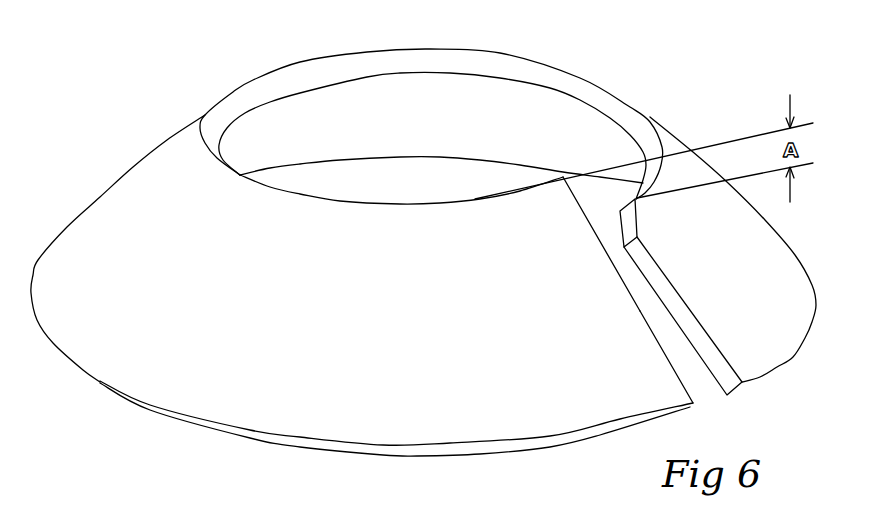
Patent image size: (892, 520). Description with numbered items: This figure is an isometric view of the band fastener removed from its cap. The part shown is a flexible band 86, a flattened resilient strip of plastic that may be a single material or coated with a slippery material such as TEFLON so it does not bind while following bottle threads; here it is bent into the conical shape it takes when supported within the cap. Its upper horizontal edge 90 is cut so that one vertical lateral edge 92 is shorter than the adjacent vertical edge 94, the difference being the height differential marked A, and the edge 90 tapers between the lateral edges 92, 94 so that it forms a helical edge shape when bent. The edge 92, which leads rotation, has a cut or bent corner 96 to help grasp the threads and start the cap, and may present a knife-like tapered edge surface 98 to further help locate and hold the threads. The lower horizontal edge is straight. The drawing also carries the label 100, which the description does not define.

The flexible band 86 is at (475, 391).
The upper horizontal edge 90 is at (247, 84).
The vertical lateral edge 92 is at (708, 330).
The vertical edge 94 is at (693, 404).
The cut or bent corner 96 is at (638, 218).
The tapered edge surface 98 is at (657, 282).
The rim top face 100 is at (587, 92).